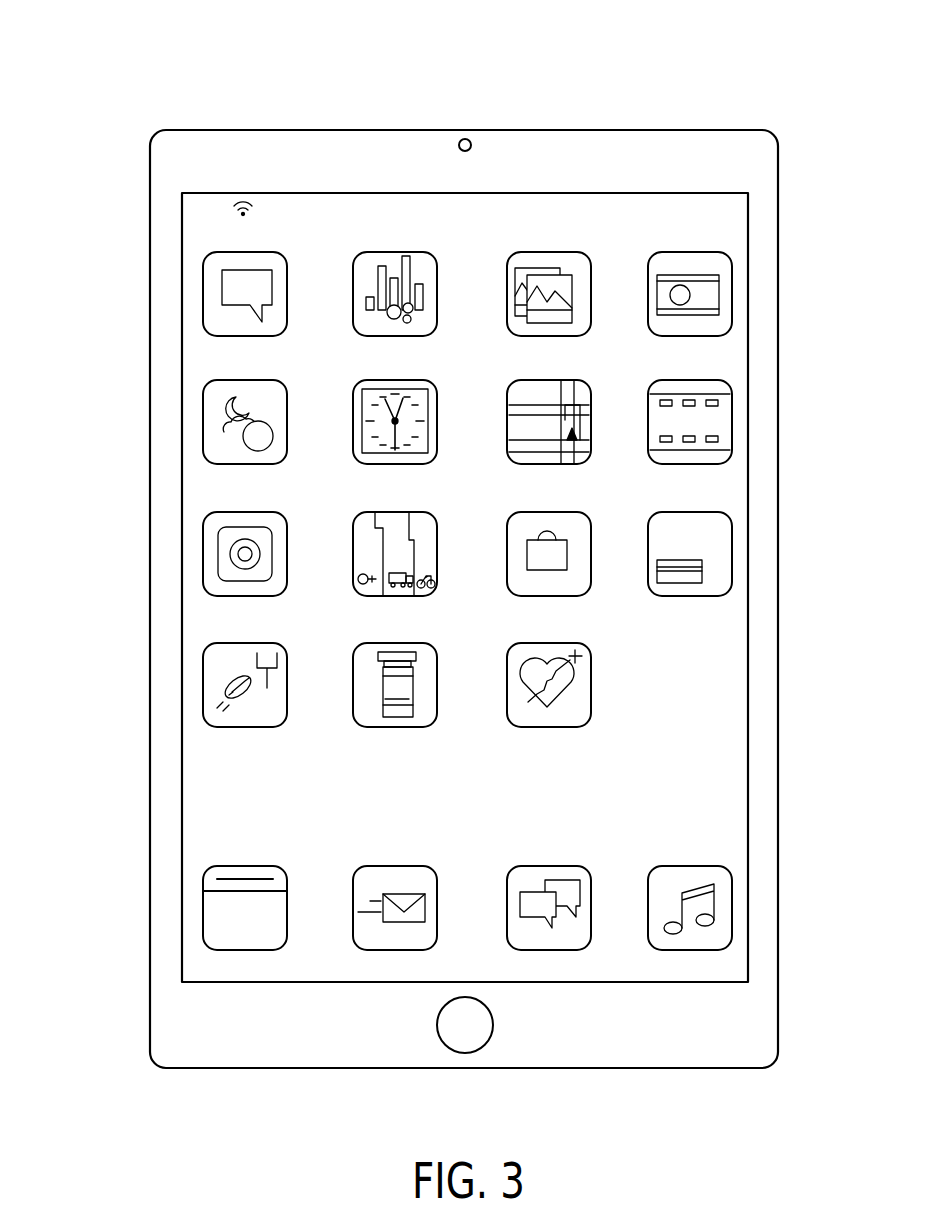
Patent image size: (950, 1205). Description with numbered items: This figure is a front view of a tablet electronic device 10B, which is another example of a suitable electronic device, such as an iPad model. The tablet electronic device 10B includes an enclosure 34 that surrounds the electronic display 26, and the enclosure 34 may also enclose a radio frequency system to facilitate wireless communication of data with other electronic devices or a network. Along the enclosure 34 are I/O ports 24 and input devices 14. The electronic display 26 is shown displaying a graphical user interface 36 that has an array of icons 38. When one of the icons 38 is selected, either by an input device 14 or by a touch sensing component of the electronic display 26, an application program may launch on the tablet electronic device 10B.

The tablet electronic device 10B is at (106, 50).
The I/O ports 24 is at (230, 130).
The input devices 14 is at (707, 130).
The electronic display 26 is at (748, 553).
The enclosure 34 is at (778, 488).
The graphical user interface 36 is at (716, 647).
The icons 38 is at (428, 335).